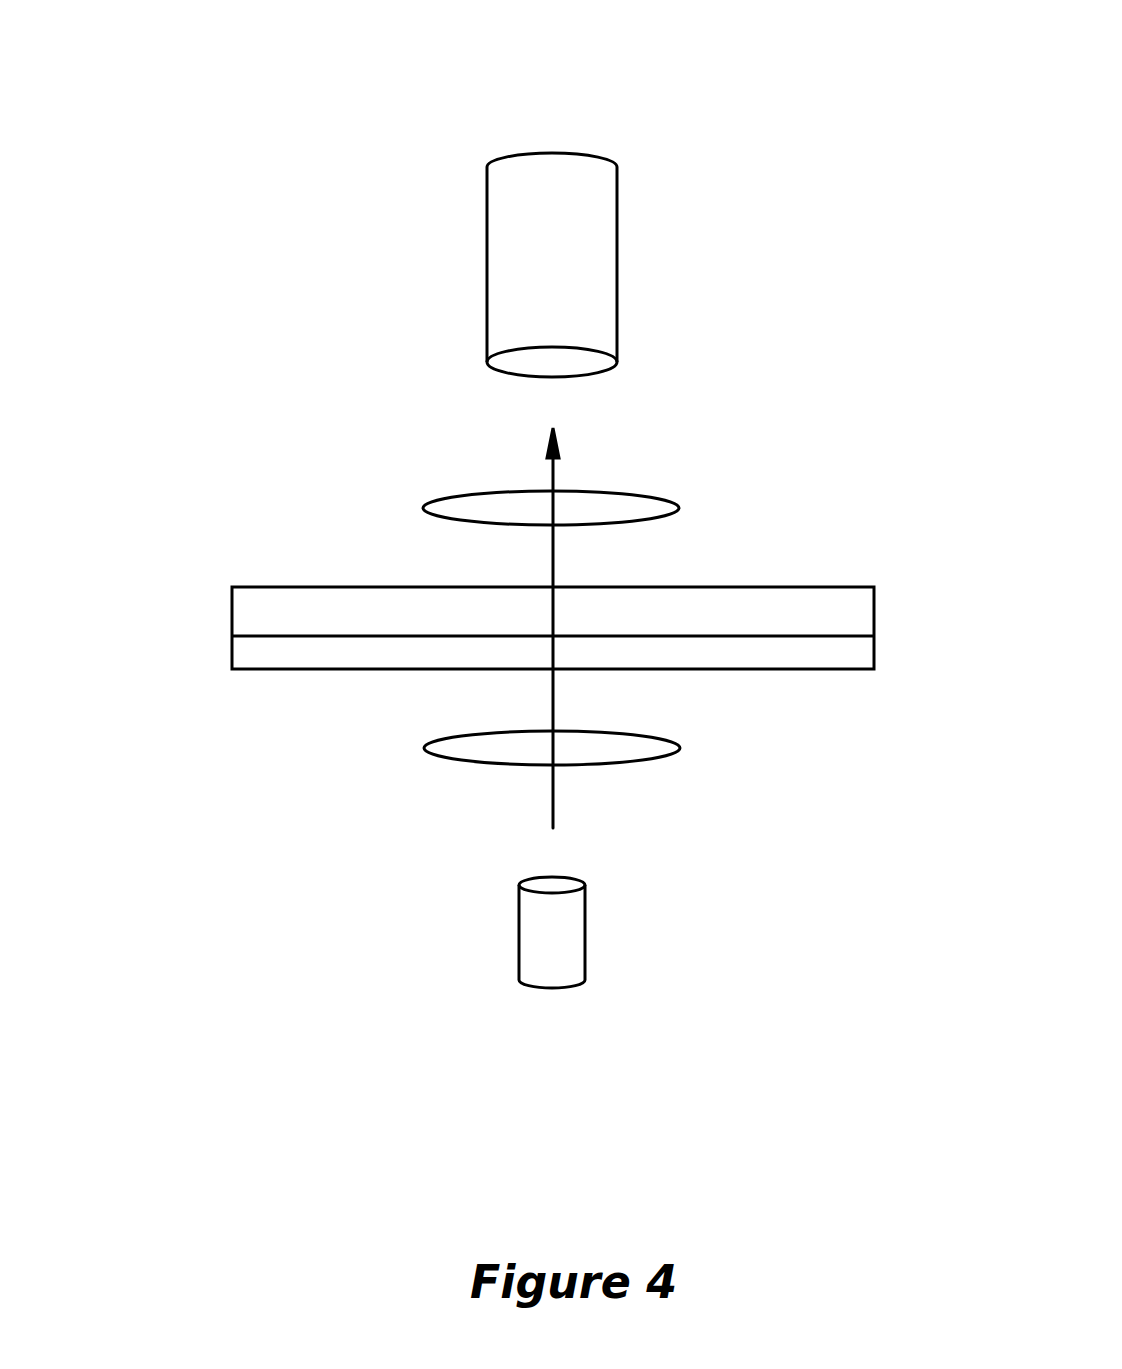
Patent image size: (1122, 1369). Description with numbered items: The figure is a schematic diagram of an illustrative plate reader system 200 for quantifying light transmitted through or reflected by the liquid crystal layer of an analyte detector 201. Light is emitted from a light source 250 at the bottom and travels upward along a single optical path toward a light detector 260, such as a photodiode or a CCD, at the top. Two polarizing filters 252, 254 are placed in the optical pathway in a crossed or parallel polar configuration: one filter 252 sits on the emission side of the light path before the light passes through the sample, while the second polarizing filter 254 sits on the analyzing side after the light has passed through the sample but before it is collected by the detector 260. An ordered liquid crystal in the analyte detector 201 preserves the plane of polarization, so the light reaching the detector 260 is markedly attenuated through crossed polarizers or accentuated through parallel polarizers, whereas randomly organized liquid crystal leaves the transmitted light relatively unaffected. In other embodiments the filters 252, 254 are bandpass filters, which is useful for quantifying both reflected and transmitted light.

The plate reader system 200 is at (750, 60).
The analyte detector 201 is at (217, 628).
The light source 250 is at (572, 936).
The first polarizing filter 252 is at (680, 748).
The second polarizing filter 254 is at (679, 511).
The light detector 260 is at (592, 258).